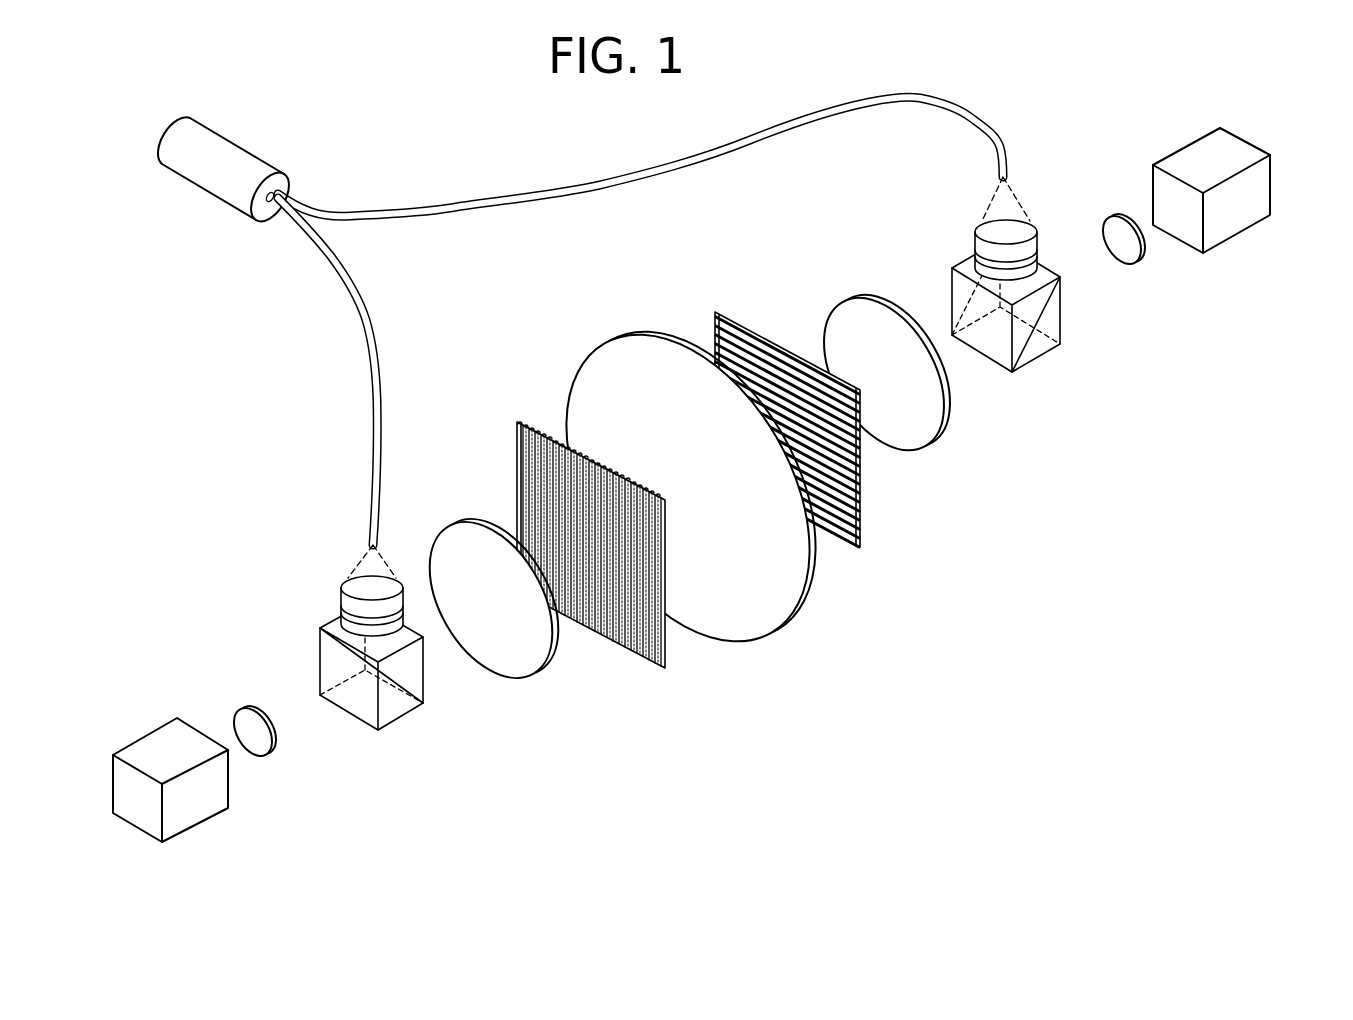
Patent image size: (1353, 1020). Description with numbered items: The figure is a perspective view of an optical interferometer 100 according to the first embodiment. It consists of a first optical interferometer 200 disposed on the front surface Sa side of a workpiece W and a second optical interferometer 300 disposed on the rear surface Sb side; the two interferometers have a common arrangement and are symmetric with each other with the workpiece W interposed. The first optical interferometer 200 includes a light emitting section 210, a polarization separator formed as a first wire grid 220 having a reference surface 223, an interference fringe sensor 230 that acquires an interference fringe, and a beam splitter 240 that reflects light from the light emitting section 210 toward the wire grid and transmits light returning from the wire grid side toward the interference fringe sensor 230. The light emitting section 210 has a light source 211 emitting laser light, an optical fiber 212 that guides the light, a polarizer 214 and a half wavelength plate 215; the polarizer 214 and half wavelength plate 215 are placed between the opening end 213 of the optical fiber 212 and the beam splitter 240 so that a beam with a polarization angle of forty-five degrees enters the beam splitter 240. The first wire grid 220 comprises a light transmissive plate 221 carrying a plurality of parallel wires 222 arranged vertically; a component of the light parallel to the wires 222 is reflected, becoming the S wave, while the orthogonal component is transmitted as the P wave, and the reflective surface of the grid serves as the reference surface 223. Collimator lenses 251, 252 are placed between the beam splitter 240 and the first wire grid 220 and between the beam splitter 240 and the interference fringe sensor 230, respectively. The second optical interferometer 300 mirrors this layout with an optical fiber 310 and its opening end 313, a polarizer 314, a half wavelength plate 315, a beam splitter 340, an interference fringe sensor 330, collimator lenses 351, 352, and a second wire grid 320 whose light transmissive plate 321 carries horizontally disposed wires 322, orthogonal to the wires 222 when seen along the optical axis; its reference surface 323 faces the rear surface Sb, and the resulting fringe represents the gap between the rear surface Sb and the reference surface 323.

The optical interferometer 100 is at (1050, 105).
The first optical interferometer 200 is at (195, 560).
The light emitting section 210 is at (322, 402).
The light source 211 is at (228, 143).
The optical fiber 212 is at (378, 304).
The opening end 213 is at (363, 557).
The polarizer 214 is at (347, 580).
The half wavelength plate 215 is at (340, 612).
The first wire grid 220 is at (520, 433).
The light transmissive plate 221 is at (518, 482).
The wires 222 is at (535, 423).
The reference surface 223 is at (563, 445).
The interference fringe sensor 230 is at (195, 815).
The beam splitter 240 is at (360, 712).
The collimator lens 251 is at (507, 665).
The collimator lens 252 is at (262, 750).
The second optical interferometer 300 is at (1092, 190).
The optical fiber 310 is at (935, 92).
The opening end 313 is at (1002, 187).
The polarizer 314 is at (995, 227).
The half wavelength plate 315 is at (980, 258).
The second wire grid 320 is at (727, 315).
The light transmissive plate 321 is at (755, 327).
The wires 322 is at (712, 325).
The reference surface 323 is at (862, 472).
The interference fringe sensor 330 is at (1240, 227).
The beam splitter 340 is at (1037, 350).
The collimator lens 351 is at (928, 433).
The collimator lens 352 is at (1123, 253).
The workpiece W is at (642, 335).
The front surface Sa is at (745, 632).
The rear surface Sb is at (805, 598).